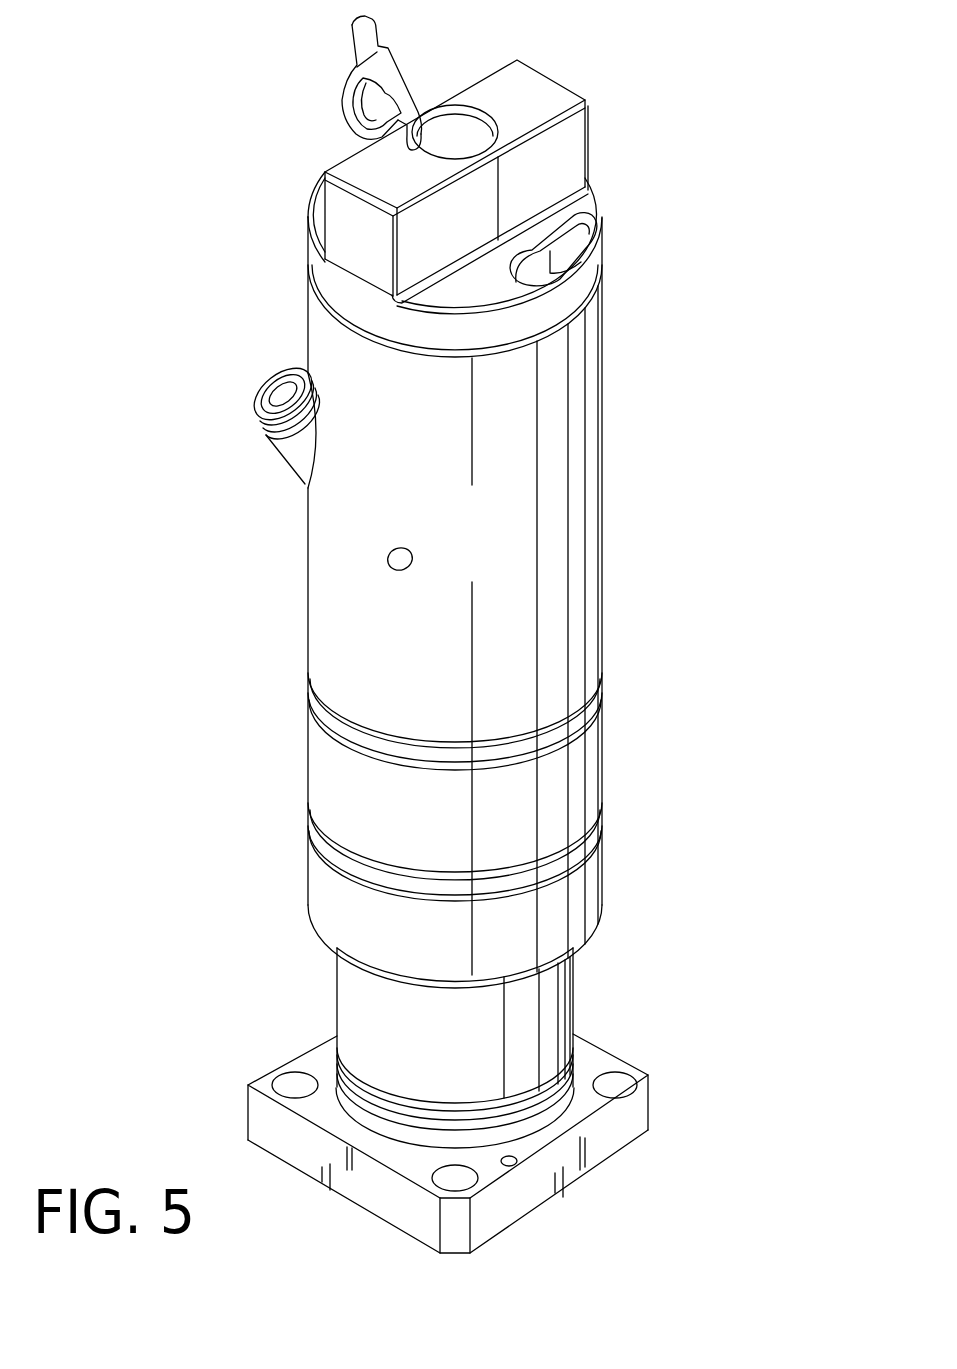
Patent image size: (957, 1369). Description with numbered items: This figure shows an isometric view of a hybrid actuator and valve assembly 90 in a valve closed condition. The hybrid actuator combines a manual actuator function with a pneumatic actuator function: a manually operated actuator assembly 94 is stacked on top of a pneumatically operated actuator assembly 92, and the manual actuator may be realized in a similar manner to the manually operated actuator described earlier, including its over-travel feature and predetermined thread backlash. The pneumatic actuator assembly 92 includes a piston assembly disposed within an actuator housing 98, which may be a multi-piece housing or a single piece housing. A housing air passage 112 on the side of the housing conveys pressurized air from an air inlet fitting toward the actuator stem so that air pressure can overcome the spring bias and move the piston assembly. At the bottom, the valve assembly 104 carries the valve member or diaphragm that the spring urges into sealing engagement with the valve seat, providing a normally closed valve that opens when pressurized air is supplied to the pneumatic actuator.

The hybrid actuator and valve assembly 90 is at (668, 168).
The manually operated actuator assembly 94 is at (275, 636).
The housing air passage 112 is at (240, 398).
The pneumatically operated actuator assembly 92 is at (422, 830).
The actuator housing 98 is at (575, 790).
The valve assembly 104 is at (275, 983).